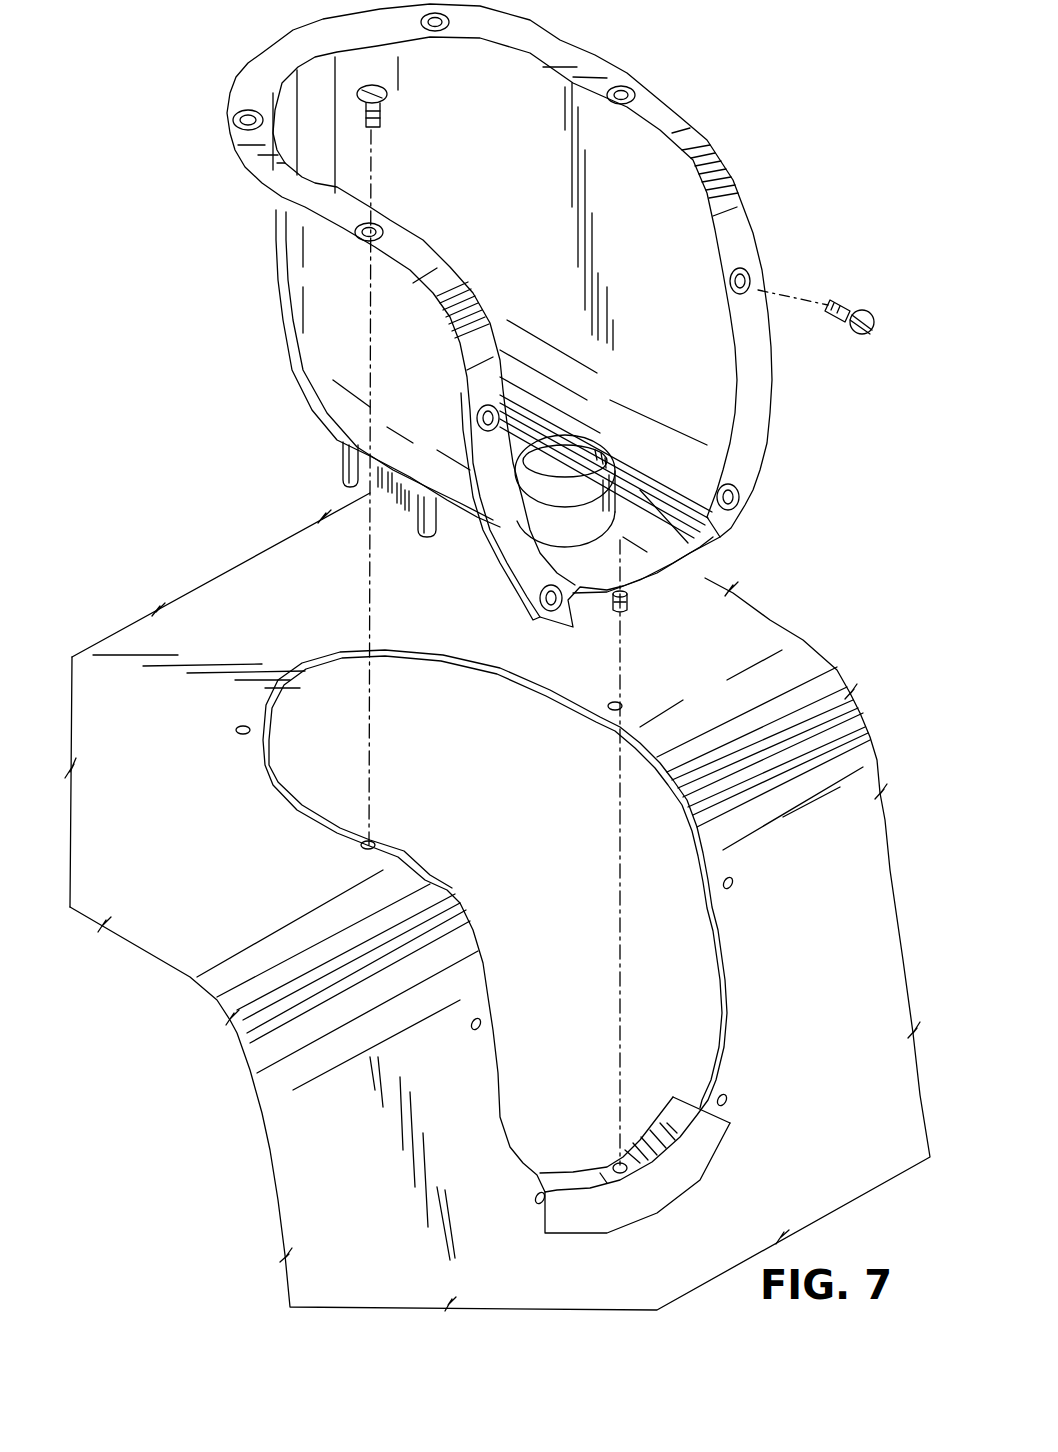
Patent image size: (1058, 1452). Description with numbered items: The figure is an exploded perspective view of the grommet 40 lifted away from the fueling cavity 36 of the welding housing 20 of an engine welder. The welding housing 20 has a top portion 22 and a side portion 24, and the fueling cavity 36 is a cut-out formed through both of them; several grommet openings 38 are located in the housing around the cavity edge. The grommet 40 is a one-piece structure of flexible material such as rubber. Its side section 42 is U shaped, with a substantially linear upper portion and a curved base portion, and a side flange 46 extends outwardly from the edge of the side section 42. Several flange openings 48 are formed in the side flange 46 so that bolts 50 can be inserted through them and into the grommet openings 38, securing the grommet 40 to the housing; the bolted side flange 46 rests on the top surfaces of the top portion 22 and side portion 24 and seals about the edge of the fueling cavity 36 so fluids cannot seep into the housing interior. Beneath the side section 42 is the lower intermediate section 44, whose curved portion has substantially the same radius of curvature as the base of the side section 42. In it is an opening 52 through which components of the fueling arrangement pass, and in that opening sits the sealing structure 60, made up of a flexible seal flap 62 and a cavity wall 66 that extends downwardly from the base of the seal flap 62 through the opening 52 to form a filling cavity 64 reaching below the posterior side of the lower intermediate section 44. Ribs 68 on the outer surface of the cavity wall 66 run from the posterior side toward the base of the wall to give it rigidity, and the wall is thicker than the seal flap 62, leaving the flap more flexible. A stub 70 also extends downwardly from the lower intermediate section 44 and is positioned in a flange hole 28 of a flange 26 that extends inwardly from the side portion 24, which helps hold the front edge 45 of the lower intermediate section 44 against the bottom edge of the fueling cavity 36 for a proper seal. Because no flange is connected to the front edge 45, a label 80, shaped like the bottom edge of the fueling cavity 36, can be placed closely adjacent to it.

The welding housing 20 is at (257, 538).
The top portion 22 is at (218, 605).
The side portion 24 is at (853, 1177).
The flange 26 is at (583, 1173).
The flange hole 28 is at (620, 1175).
The fueling cavity 36 is at (687, 932).
The grommet openings 38 is at (623, 705).
The grommet 40 is at (755, 231).
The side section 42 is at (310, 90).
The lower intermediate section 44 is at (657, 547).
The front edge 45 is at (660, 563).
The side flange 46 is at (545, 50).
The flange openings 48 is at (240, 128).
The bolts 50 is at (387, 96).
The opening 52 is at (547, 485).
The sealing structure 60 is at (623, 457).
The seal flap 62 is at (605, 490).
The filling cavity 64 is at (560, 446).
The cavity wall 66 is at (523, 427).
The ribs 68 is at (350, 463).
The stub 70 is at (630, 600).
The label 80 is at (697, 1167).